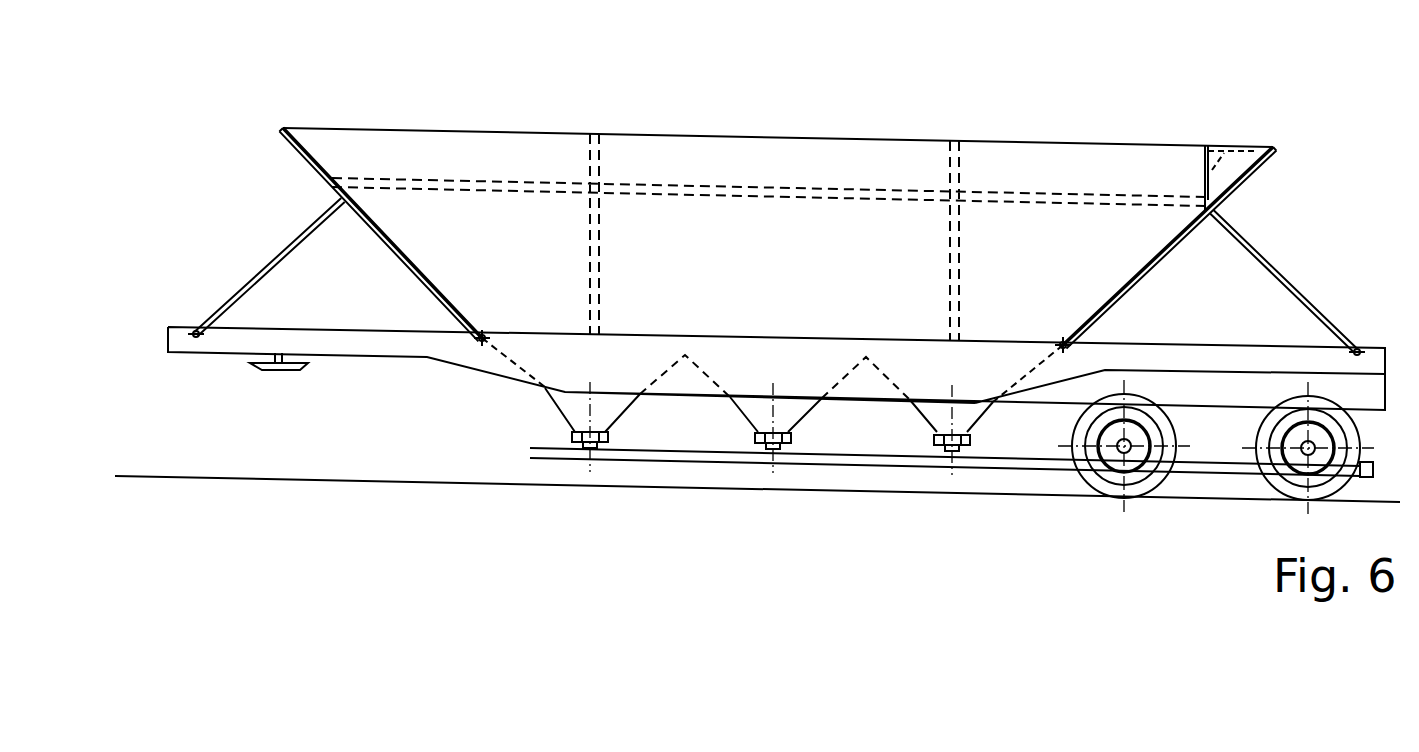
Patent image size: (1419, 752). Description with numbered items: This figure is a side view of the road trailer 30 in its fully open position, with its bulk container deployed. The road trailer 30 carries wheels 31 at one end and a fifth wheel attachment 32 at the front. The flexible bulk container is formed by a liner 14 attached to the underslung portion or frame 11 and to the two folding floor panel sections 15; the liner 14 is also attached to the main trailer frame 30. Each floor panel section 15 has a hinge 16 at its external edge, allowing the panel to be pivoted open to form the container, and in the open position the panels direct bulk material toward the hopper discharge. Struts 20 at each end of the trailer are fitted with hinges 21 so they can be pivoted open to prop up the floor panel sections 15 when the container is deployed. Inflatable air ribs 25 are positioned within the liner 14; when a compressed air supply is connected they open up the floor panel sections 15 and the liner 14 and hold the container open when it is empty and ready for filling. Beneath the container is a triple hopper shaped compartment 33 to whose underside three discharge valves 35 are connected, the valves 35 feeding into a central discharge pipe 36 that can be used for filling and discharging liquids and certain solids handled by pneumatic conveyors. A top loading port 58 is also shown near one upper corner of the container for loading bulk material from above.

The underslung portion 11 is at (500, 367).
The liner 14 is at (648, 153).
The floor panel sections 15 is at (407, 260).
The hinges 16 is at (485, 333).
The struts 20 is at (303, 228).
The hinges 21 is at (196, 337).
The inflatable air ribs 25 is at (408, 183).
The road trailer 30 is at (880, 116).
The wheels 31 is at (1115, 478).
The fifth wheel attachment 32 is at (265, 367).
The triple hopper shaped compartment 33 is at (535, 413).
The discharge valves 35 is at (608, 435).
The central discharge pipe 36 is at (808, 457).
The top loading ports 58 is at (1240, 147).